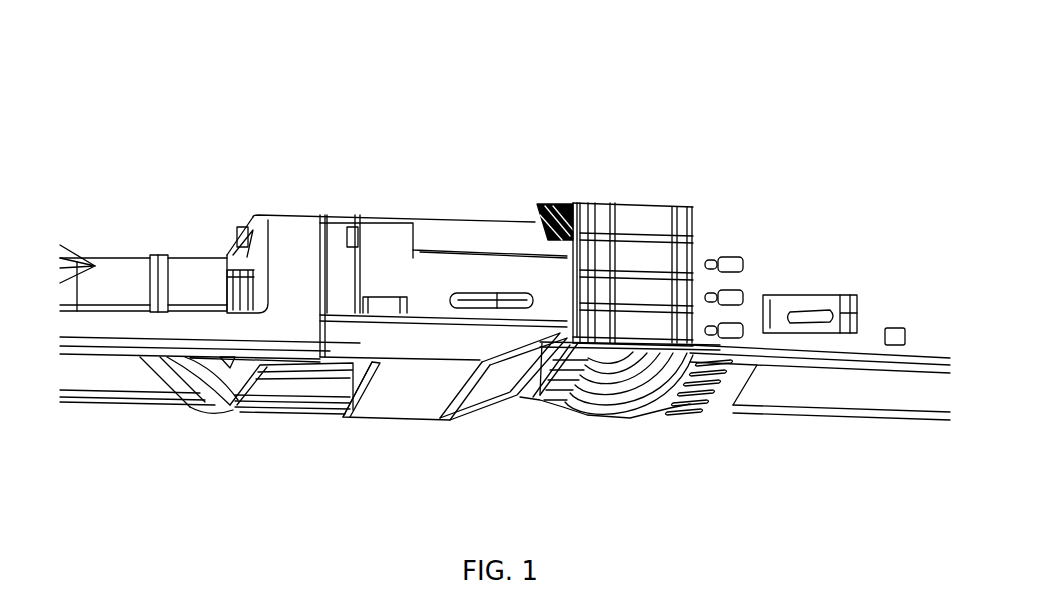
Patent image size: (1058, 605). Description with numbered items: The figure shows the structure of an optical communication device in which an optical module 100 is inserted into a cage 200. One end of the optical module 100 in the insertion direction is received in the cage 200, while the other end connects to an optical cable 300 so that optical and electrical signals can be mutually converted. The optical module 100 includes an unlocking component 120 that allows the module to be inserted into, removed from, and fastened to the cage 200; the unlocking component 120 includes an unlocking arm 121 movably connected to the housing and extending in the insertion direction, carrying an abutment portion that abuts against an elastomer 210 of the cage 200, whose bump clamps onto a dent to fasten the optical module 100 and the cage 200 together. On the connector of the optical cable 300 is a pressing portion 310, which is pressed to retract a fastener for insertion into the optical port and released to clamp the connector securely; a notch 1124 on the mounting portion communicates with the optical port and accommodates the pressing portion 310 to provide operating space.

The optical module 100 is at (343, 227).
The unlocking arm 121 is at (422, 268).
The optical cable 300 is at (177, 296).
The unlocking component 120 is at (153, 323).
The pressing portion 310 is at (208, 382).
The notch 1124 is at (340, 390).
The cage 200 is at (724, 382).
The elastomer 210 is at (813, 318).